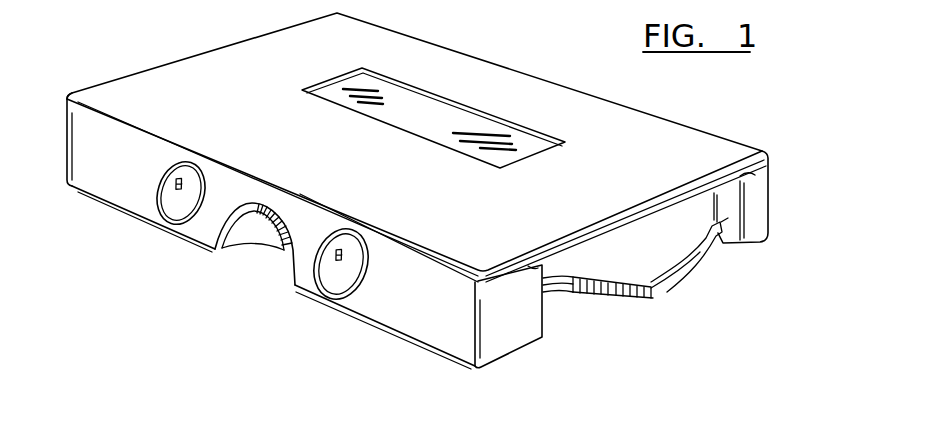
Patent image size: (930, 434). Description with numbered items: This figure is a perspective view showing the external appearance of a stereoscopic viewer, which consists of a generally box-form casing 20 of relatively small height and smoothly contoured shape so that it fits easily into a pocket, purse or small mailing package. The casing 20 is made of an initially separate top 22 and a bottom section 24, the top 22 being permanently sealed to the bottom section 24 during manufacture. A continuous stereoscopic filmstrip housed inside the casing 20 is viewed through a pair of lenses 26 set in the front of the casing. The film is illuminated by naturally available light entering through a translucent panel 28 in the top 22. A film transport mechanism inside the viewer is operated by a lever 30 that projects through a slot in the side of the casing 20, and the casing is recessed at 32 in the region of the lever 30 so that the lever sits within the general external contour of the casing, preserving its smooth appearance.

The casing 20 is at (783, 156).
The top 22 is at (416, 187).
The bottom section 24 is at (523, 351).
The lenses 26 is at (184, 208).
The translucent panel 28 is at (433, 118).
The lever 30 is at (657, 289).
The recess 32 is at (588, 303).